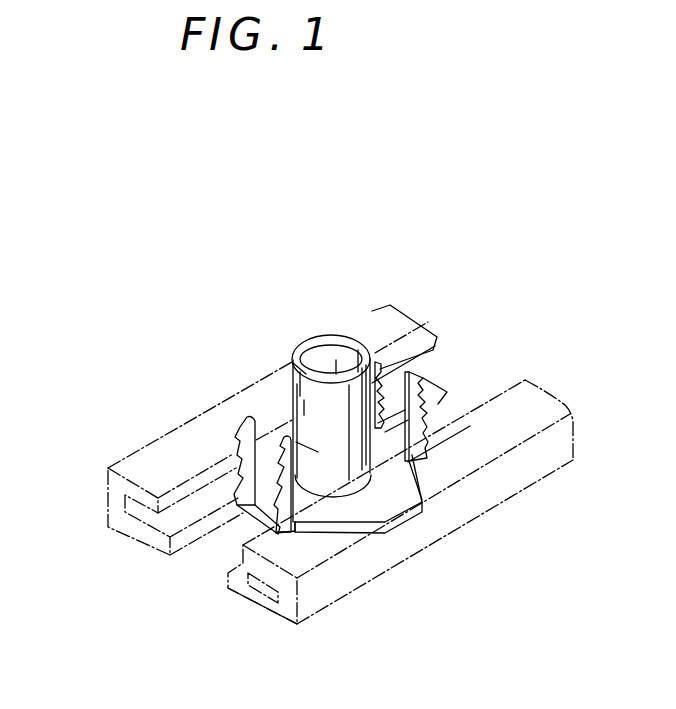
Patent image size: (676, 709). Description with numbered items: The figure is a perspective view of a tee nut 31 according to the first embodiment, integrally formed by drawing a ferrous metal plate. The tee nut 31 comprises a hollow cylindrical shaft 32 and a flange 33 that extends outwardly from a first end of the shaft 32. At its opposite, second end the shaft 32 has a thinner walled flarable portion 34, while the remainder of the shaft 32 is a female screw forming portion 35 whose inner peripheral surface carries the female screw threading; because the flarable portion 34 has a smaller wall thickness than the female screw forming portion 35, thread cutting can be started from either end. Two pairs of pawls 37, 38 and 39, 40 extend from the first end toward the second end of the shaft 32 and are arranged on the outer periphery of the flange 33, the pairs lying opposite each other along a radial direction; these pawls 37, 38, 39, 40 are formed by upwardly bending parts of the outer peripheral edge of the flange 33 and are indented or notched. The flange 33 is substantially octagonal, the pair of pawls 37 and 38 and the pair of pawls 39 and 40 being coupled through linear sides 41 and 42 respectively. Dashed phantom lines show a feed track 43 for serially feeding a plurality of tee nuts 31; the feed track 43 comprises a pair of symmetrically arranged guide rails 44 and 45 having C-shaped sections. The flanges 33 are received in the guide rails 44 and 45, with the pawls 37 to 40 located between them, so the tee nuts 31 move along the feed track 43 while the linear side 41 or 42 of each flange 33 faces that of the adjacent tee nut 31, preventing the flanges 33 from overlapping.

The tee nut 31 is at (283, 330).
The shaft 32 is at (358, 340).
The flange 33 is at (386, 508).
The flarable portion 34 is at (300, 390).
The female screw forming portion 35 is at (292, 440).
The pawl 37 is at (238, 428).
The pawl 38 is at (302, 503).
The pawl 39 is at (395, 342).
The pawl 40 is at (427, 372).
The linear side 41 is at (262, 513).
The linear side 42 is at (447, 391).
The feed track 43 is at (107, 481).
The guide rail 44 is at (125, 532).
The guide rail 45 is at (248, 600).